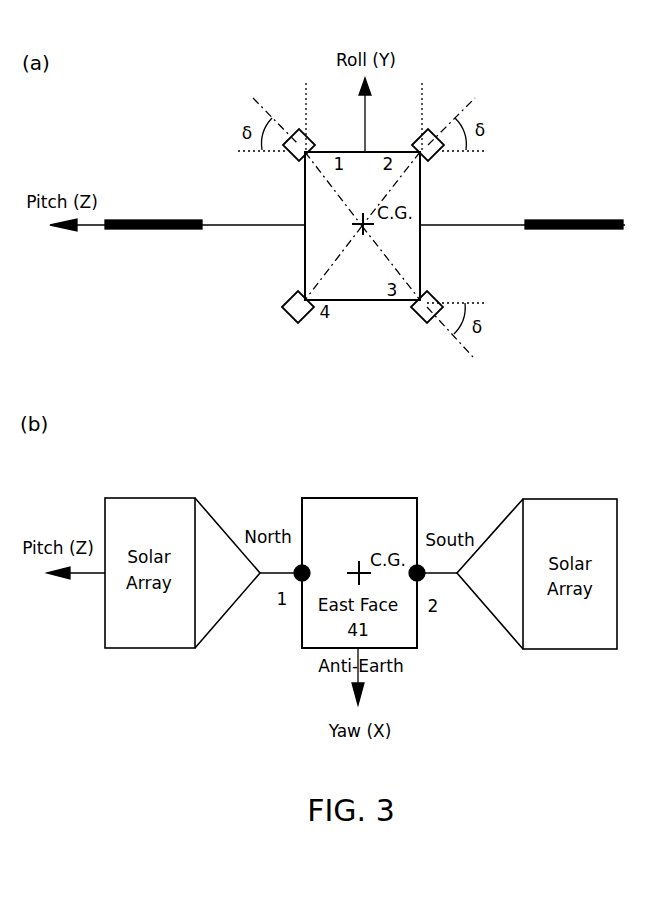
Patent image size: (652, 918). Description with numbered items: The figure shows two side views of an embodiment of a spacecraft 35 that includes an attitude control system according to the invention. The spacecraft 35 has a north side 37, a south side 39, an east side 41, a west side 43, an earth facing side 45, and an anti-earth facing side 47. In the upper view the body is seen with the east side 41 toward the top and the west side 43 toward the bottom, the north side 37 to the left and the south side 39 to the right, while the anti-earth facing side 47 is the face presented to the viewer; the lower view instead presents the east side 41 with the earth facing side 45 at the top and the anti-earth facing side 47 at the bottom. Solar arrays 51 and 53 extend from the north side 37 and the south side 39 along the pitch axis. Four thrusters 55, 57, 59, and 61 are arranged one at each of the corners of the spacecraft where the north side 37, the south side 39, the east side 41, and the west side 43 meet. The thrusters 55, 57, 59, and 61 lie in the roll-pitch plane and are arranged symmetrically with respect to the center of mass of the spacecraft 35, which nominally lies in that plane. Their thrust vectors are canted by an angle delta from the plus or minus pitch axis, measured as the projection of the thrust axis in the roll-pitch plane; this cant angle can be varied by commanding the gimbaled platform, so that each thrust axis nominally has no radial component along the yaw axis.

The spacecraft 35 is at (562, 103).
The north side 37 is at (270, 226).
The south side 39 is at (467, 226).
The east side 41 is at (362, 124).
The west side 43 is at (362, 336).
The earth facing side 45 is at (359, 468).
The anti-earth facing side 47 is at (324, 294).
The solar array 51 is at (150, 220).
The solar array 53 is at (577, 226).
The thruster 55 is at (292, 131).
The thruster 57 is at (436, 131).
The thruster 59 is at (288, 316).
The thruster 61 is at (432, 294).